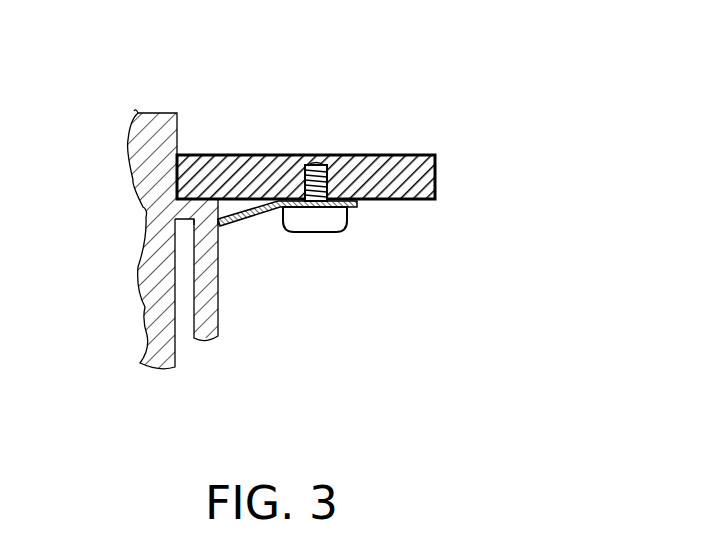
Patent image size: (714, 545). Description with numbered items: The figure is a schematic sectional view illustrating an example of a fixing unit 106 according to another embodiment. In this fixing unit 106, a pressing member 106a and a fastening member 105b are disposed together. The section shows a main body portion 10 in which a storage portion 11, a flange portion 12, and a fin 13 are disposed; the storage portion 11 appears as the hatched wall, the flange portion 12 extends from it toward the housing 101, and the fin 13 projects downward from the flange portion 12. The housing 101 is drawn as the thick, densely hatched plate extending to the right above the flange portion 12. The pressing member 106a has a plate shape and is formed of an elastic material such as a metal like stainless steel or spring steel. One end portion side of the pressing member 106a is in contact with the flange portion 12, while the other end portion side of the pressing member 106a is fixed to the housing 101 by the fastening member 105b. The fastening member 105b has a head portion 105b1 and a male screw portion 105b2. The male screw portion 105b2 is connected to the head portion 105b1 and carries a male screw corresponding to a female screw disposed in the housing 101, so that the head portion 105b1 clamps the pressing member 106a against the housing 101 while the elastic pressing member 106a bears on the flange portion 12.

The main body portion 10 is at (143, 94).
The storage portion 11 is at (160, 133).
The flange portion 12 is at (222, 207).
The fin 13 is at (205, 323).
The housing 101 is at (403, 175).
The fastening member 105b is at (340, 235).
The head portion 105b1 is at (318, 225).
The male screw portion 105b2 is at (318, 165).
The fixing unit 106 is at (522, 208).
The pressing member 106a is at (348, 203).